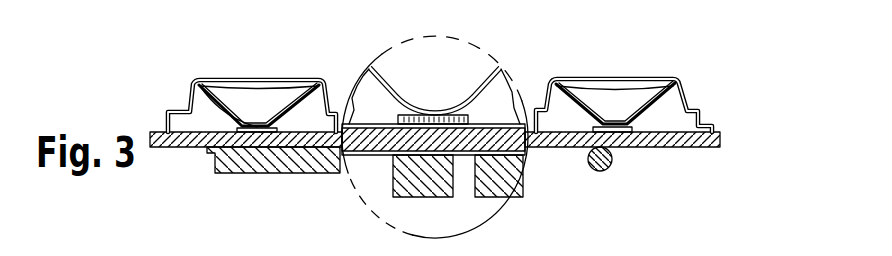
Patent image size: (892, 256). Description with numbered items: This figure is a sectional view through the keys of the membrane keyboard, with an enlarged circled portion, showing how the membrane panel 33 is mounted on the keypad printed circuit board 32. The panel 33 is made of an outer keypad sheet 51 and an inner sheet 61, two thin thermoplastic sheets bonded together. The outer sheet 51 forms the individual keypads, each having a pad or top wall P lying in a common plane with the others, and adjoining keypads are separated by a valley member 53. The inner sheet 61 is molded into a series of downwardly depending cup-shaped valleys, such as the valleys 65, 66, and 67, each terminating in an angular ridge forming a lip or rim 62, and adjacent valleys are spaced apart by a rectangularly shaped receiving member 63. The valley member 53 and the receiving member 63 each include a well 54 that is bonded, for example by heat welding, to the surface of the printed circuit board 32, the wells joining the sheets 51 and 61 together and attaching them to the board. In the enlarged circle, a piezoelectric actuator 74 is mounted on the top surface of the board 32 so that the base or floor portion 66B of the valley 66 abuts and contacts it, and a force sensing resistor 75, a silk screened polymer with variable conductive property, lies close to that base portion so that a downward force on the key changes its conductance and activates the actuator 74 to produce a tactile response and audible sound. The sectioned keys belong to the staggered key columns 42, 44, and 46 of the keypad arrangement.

The column 42 is at (219, 79).
The lip or rim 62 is at (218, 79).
The valley 65 is at (230, 103).
The top wall P is at (195, 79).
The well 54 is at (166, 128).
The column 44 is at (410, 124).
The valley 66 is at (416, 63).
The base or floor portion 66B is at (433, 108).
The piezoelectric actuator 74 is at (462, 114).
The force sensing resistor 75 is at (482, 92).
The valley 67 is at (597, 113).
The column 46 is at (642, 98).
The outer keypad sheet 51 is at (635, 78).
The valley member 53 is at (703, 117).
The membrane panel 33 is at (729, 114).
The inner sheet 61 is at (647, 103).
The keypad printed circuit board 32 is at (676, 148).
The receiving member 63 is at (692, 137).